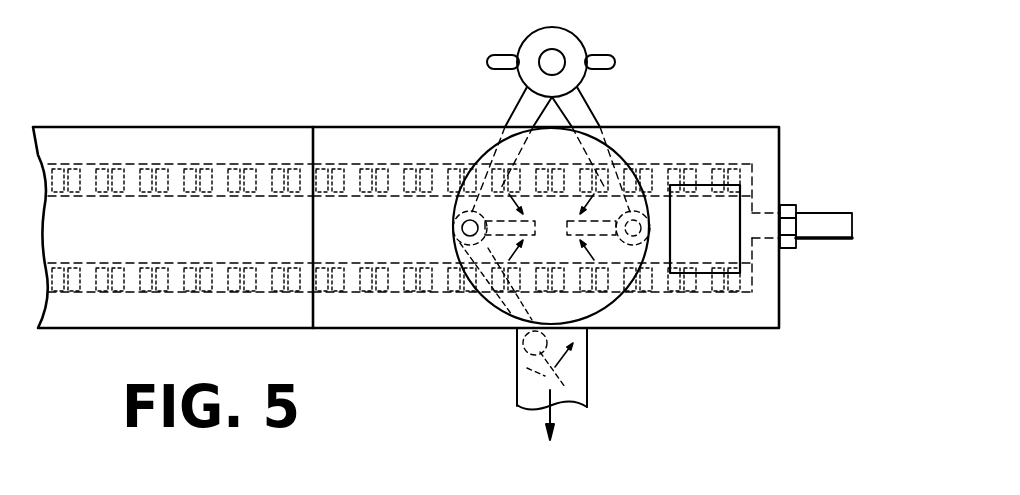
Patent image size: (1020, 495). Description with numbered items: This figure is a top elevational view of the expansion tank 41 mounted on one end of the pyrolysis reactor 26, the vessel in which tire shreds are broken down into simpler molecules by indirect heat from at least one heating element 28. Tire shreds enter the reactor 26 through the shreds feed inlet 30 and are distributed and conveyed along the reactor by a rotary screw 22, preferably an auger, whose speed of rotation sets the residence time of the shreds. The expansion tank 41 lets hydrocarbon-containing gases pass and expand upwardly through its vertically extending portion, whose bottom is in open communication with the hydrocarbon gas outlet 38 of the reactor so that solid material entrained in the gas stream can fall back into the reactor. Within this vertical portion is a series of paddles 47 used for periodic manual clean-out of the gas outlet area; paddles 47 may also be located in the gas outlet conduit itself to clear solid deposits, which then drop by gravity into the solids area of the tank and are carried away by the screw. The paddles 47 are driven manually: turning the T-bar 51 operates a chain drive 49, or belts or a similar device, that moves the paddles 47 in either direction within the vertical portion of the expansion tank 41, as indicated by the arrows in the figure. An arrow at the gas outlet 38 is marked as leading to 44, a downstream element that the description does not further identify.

The rotary screw 22 is at (833, 222).
The pyrolysis reactor 26 is at (171, 116).
The heating element 28 is at (257, 143).
The shreds feed inlet 30 is at (725, 200).
The hydrocarbon gas outlet 38 is at (588, 368).
The expansion tank 41 is at (695, 153).
The downstream destination 44 is at (598, 422).
The paddles 47 is at (448, 208).
The chain drive 49 is at (474, 140).
The T-bar 51 is at (574, 47).